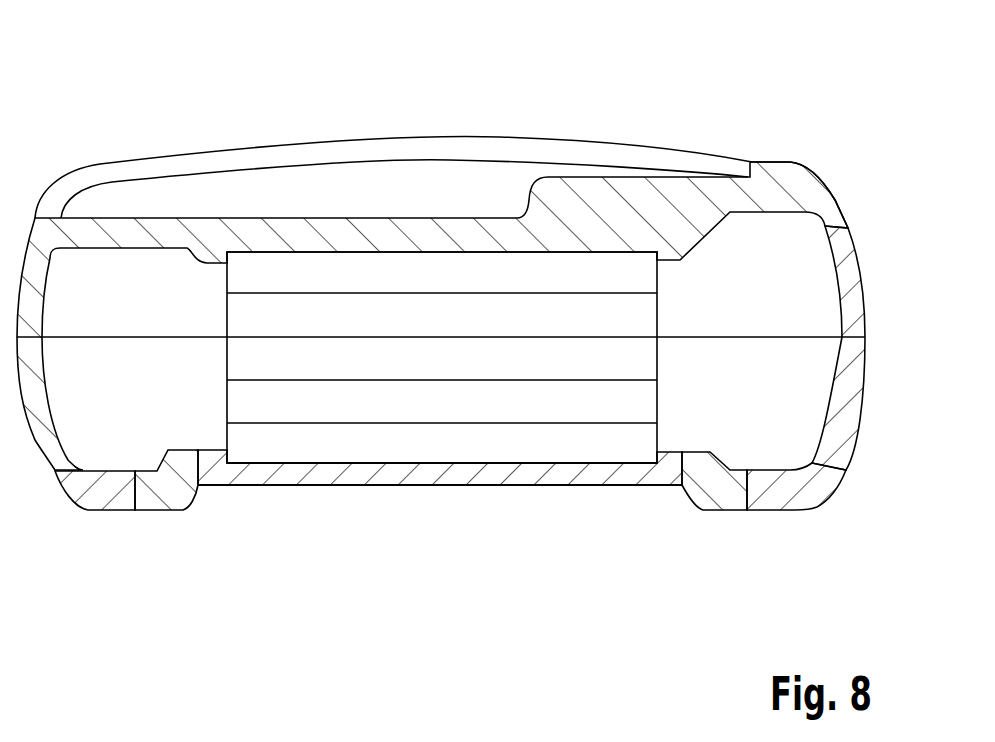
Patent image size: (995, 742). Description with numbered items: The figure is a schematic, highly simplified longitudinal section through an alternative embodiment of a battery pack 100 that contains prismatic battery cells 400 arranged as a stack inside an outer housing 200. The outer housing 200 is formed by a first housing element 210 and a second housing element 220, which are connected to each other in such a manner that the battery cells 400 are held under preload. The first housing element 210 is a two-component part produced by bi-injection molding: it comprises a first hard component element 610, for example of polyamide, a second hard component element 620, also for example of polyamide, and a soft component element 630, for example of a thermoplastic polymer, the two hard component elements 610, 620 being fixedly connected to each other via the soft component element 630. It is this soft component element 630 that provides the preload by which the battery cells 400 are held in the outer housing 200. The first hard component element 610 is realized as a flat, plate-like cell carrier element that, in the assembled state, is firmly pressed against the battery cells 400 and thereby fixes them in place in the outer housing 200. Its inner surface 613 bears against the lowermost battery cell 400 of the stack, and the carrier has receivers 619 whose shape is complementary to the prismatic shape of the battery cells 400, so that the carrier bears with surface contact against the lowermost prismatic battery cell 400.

The battery pack 100 is at (753, 123).
The outer housing 200 is at (128, 228).
The first housing element 210 is at (807, 505).
The second housing element 220 is at (800, 193).
The prismatic battery cell 400 is at (645, 280).
The first hard component element 610 is at (517, 468).
The inner surface 613 is at (407, 447).
The receiver 619 is at (313, 447).
The second hard component element 620 is at (80, 495).
The soft component element 630 is at (705, 495).